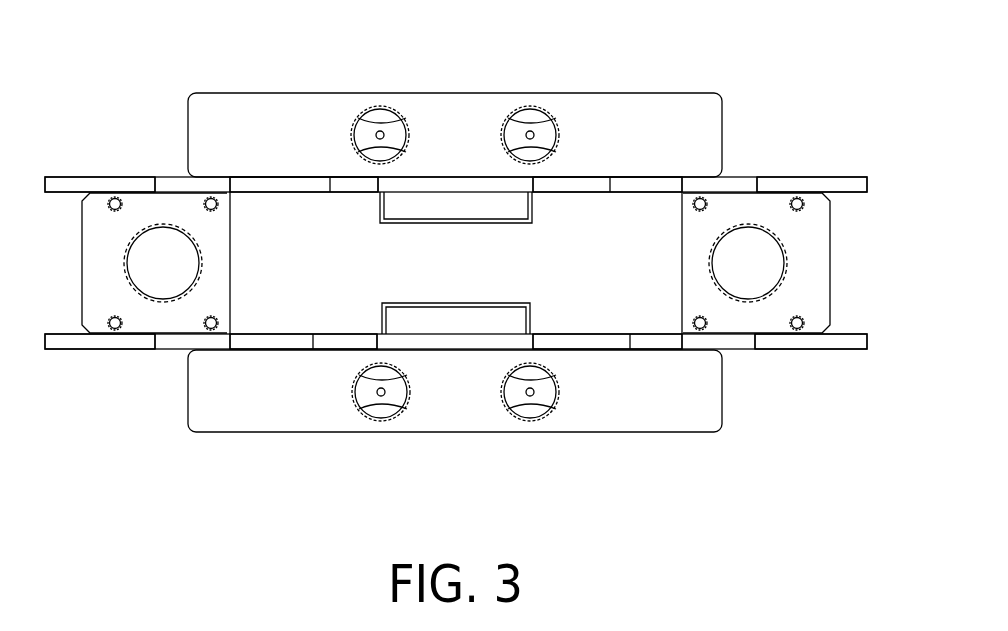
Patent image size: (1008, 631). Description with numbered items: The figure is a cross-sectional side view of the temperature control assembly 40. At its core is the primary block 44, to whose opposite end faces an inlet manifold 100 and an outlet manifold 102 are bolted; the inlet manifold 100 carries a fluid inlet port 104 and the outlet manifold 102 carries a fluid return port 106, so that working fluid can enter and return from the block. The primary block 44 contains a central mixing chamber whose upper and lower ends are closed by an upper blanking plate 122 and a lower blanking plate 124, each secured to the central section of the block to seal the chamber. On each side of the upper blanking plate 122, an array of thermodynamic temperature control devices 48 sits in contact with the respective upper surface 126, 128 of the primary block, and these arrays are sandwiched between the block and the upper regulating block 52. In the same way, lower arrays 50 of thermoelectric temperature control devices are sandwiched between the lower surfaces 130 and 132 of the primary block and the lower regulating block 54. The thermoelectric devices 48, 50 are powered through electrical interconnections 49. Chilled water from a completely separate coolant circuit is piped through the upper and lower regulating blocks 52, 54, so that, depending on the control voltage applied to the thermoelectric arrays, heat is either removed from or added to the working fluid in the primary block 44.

The temperature control assembly 40 is at (148, 55).
The primary block 44 is at (240, 212).
The thermodynamic temperature control devices 48 is at (283, 175).
The electrical interconnections 49 is at (82, 176).
The arrays of thermoelectric temperature control devices 50 is at (260, 350).
The upper regulating block 52 is at (707, 135).
The lower regulating block 54 is at (687, 410).
The inlet manifold 100 is at (97, 218).
The outlet manifold 102 is at (812, 226).
The fluid inlet port 104 is at (137, 253).
The fluid return port 106 is at (762, 270).
The upper blanking plate 122 is at (455, 200).
The lower blanking plate 124 is at (458, 322).
The upper surface of the primary block 126 is at (333, 190).
The upper surface of the primary block 128 is at (613, 190).
The lower surface of the primary block 130 is at (313, 350).
The lower surface of the primary block 132 is at (630, 338).